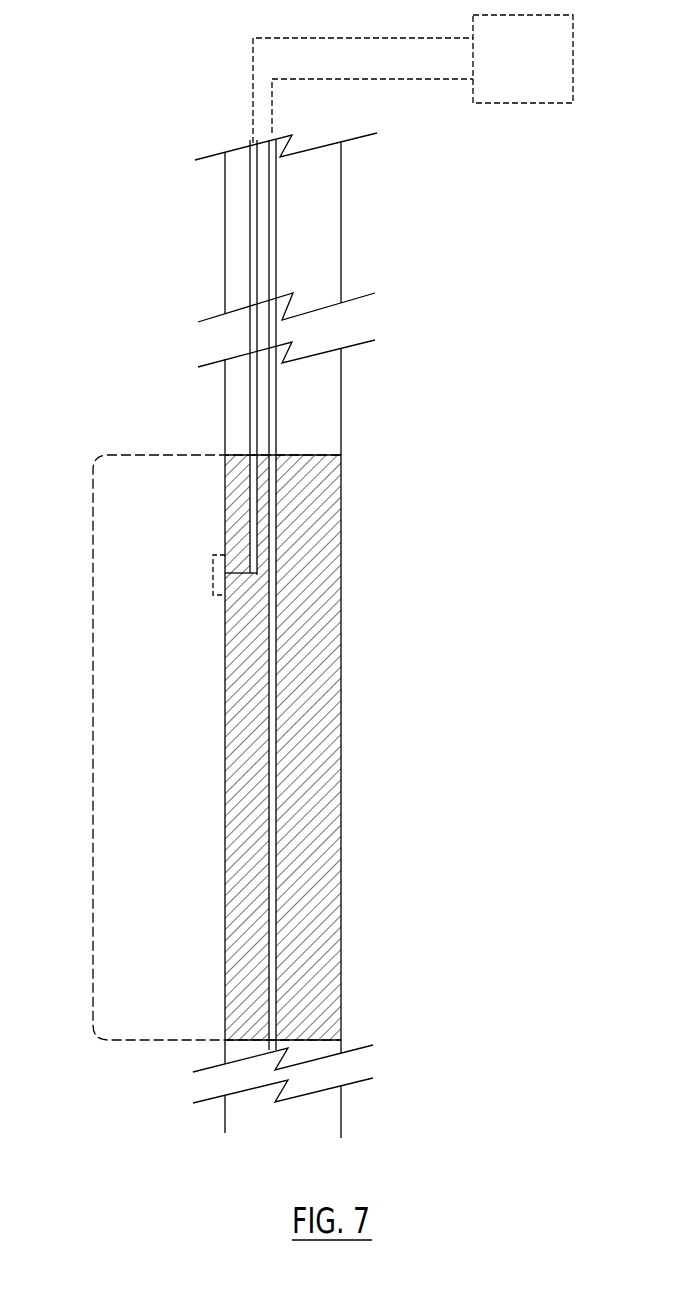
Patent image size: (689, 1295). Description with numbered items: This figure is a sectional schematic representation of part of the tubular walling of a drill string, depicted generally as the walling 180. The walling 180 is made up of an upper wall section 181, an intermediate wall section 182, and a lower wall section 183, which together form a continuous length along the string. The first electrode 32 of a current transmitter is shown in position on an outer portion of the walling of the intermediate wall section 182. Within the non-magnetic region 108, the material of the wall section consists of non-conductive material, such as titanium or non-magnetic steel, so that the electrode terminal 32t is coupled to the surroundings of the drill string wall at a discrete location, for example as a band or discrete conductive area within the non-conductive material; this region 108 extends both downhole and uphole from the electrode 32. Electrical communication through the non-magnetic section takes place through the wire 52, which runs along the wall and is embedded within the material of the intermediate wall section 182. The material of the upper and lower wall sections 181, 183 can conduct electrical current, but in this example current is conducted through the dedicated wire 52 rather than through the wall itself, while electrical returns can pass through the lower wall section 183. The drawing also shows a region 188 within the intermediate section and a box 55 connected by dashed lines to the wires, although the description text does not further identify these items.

The walling 180 is at (158, 180).
The upper wall section 181 is at (327, 232).
The intermediate wall section 182 is at (383, 568).
The lower wall section 183 is at (341, 1125).
The potting material 188 is at (318, 703).
The non-magnetic region 108 is at (93, 740).
The wire 52 is at (250, 410).
The first electrode 32 is at (212, 575).
The electrode terminal 32t is at (219, 575).
The controller 55 is at (549, 61).